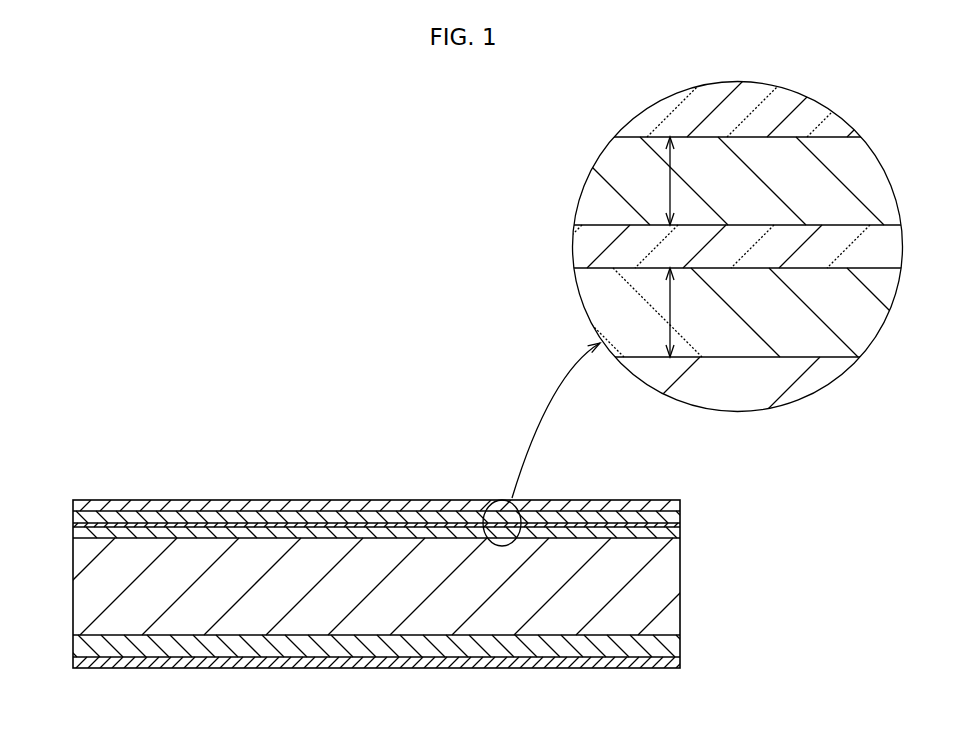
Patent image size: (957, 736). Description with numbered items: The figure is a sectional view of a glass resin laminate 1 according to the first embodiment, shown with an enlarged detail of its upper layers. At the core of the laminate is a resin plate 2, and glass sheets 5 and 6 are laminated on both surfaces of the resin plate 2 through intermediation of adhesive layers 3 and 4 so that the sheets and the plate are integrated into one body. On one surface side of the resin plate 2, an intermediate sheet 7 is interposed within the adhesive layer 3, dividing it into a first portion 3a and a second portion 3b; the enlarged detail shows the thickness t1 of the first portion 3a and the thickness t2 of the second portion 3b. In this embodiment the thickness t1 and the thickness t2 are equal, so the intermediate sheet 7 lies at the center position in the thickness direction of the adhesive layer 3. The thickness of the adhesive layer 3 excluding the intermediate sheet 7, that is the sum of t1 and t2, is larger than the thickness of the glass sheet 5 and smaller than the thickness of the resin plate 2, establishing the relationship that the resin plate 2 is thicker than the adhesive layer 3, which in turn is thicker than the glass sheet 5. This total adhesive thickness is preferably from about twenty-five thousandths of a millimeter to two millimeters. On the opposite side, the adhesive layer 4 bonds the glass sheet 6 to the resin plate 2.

The glass resin laminate 1 is at (322, 425).
The resin plate 2 is at (658, 584).
The adhesive layer 3 is at (733, 495).
The first portion 3a is at (672, 517).
The second portion 3b is at (672, 530).
The adhesive layer 4 is at (670, 646).
The glass sheet 5 is at (603, 500).
The glass sheet 6 is at (583, 667).
The intermediate sheet 7 is at (100, 536).
The thickness of first portion t1 is at (668, 183).
The thickness of second portion t2 is at (668, 318).